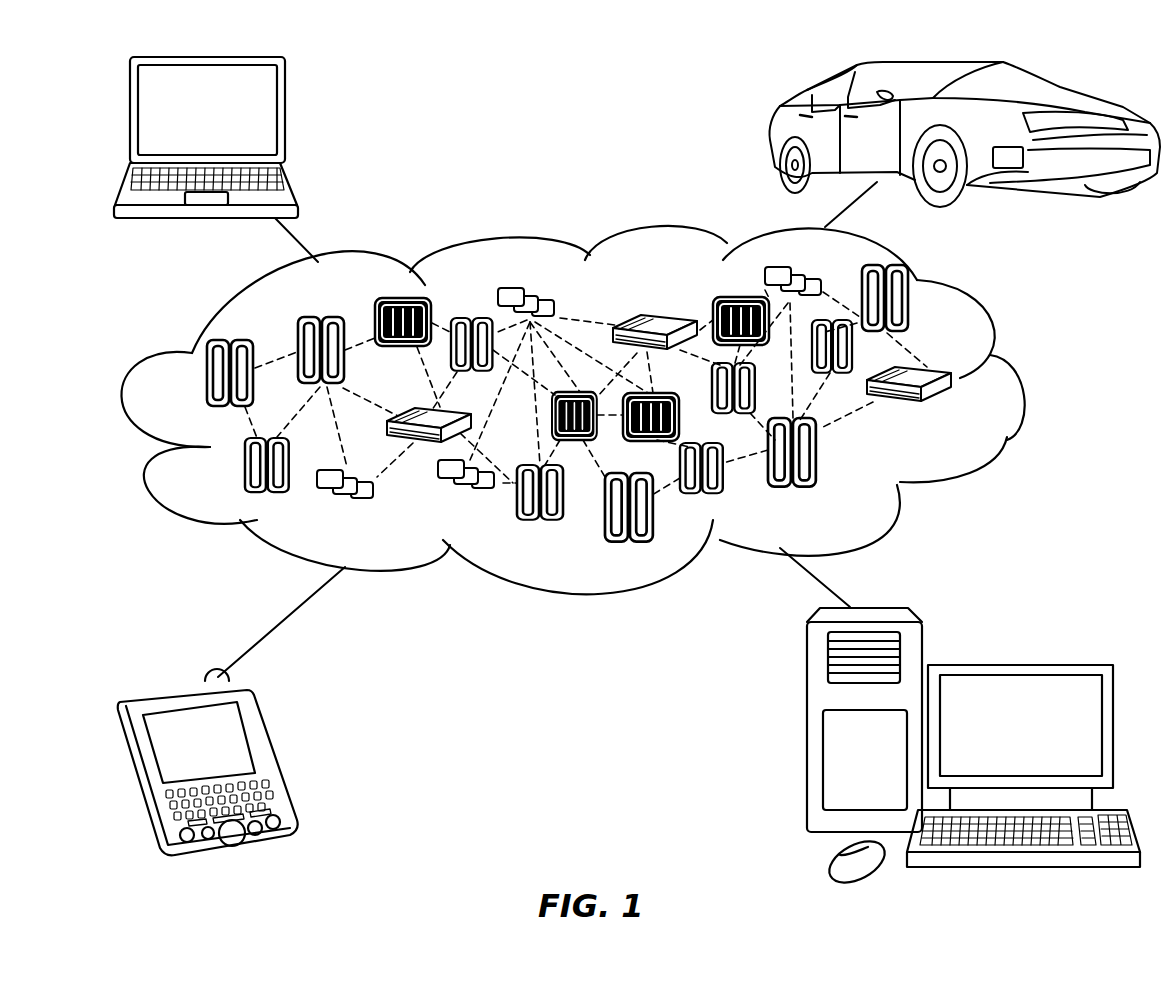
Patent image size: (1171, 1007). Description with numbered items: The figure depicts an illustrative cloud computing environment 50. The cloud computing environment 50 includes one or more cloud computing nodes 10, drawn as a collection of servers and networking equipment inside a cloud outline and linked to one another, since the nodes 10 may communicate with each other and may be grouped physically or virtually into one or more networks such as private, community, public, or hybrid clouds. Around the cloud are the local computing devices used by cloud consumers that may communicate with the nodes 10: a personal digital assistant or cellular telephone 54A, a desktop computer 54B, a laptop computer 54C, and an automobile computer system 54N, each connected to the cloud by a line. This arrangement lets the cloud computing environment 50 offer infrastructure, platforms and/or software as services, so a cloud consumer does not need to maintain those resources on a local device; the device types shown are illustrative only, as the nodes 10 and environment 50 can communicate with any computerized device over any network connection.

The cloud computing nodes 10 is at (962, 412).
The cloud computing environment 50 is at (1015, 382).
The personal digital assistant (PDA) or cellular telephone 54A is at (273, 757).
The desktop computer 54B is at (1018, 665).
The laptop computer 54C is at (285, 118).
The automobile computer system 54N is at (770, 132).